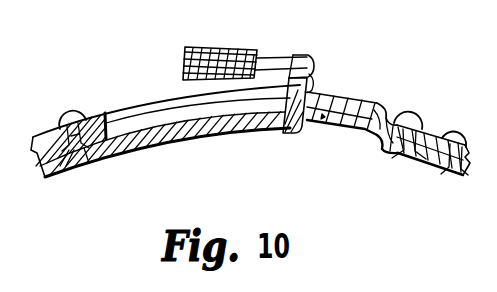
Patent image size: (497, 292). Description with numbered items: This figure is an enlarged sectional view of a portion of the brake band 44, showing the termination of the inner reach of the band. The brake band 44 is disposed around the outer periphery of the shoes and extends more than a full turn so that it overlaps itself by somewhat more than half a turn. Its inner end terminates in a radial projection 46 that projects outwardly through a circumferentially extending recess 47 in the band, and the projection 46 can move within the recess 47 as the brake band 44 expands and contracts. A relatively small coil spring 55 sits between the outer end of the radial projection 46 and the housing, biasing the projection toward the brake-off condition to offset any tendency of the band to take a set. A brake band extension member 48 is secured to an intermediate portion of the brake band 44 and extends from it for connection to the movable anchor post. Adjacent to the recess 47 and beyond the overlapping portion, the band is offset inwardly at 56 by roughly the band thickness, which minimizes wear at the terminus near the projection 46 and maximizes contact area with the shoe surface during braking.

The brake band 44 is at (83, 159).
The coil spring 55 is at (245, 50).
The radial projection 46 is at (308, 90).
The circumferentially extending recess 47 is at (323, 118).
The brake band extension member 48 is at (380, 107).
The inward offset 56 is at (392, 117).